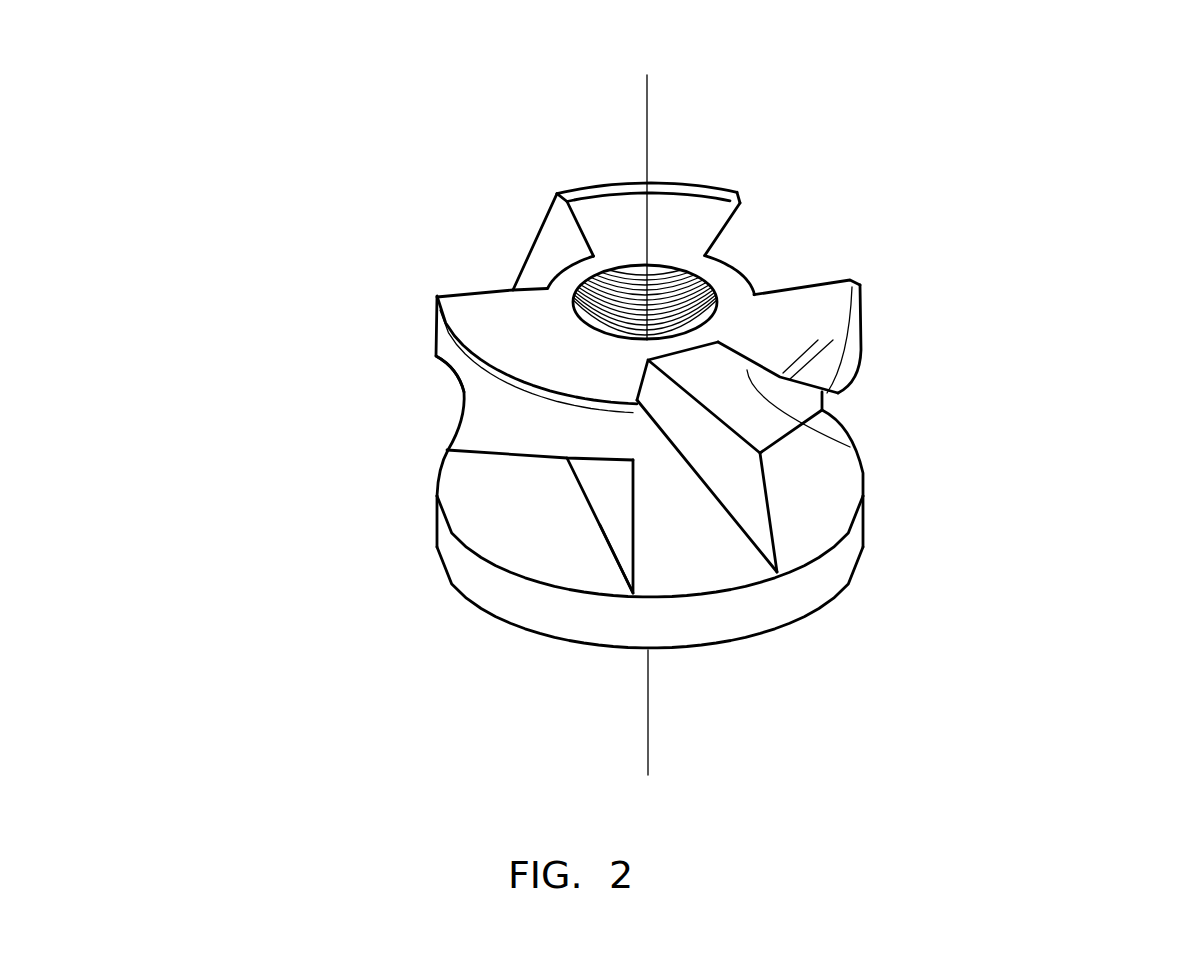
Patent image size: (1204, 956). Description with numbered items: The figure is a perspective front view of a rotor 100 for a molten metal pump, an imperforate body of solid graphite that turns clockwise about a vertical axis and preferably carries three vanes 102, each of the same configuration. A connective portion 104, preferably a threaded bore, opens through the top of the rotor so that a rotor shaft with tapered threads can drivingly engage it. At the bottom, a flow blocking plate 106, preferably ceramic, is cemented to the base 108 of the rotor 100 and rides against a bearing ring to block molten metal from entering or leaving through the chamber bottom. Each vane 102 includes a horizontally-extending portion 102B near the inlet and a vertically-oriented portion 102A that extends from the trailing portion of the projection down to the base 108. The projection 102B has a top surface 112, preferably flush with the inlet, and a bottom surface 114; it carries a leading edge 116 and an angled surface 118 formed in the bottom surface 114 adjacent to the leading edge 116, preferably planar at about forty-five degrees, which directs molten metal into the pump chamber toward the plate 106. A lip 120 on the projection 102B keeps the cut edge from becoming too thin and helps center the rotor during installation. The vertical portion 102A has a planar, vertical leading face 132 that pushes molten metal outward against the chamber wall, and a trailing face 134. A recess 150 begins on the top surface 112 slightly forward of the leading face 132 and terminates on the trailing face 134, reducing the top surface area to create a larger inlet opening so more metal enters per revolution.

The rotor 100 is at (1087, 85).
The vane 102 is at (672, 172).
The vertically-oriented portion 102A is at (596, 478).
The horizontally-extending portion 102B is at (430, 365).
The connective portion 104 is at (670, 303).
The flow blocking plate 106 is at (857, 563).
The base 108 is at (617, 567).
The top surface 112 is at (682, 205).
The bottom surface 114 is at (462, 424).
The leading edge 116 is at (475, 288).
The angled surface 118 is at (850, 440).
The lip 120 is at (448, 290).
The leading face 132 is at (617, 503).
The trailing face 134 is at (745, 478).
The recess 150 is at (548, 236).